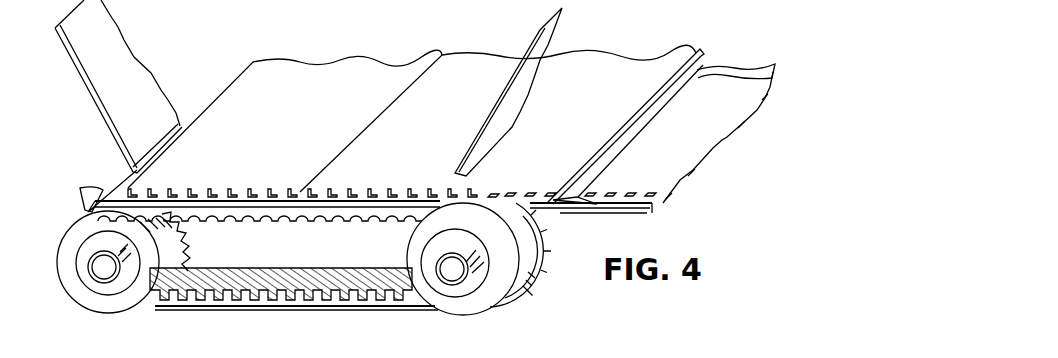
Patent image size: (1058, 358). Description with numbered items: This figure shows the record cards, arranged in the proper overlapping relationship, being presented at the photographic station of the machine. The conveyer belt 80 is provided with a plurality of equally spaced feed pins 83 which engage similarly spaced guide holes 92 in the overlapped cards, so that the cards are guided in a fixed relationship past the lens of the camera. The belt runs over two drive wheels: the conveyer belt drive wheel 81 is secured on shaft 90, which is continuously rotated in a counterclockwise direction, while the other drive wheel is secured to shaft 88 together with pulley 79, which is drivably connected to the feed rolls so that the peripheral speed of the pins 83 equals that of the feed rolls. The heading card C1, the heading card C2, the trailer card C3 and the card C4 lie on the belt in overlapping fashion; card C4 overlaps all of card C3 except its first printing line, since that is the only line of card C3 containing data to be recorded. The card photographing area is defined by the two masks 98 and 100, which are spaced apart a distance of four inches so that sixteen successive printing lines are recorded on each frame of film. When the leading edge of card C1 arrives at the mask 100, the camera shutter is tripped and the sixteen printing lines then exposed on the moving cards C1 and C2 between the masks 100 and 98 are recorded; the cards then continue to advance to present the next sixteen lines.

The pulley 79 is at (497, 297).
The conveyer belt 80 is at (283, 273).
The conveyer belt drive wheel 81 is at (72, 244).
The feed pins 83 is at (86, 198).
The shaft 88 is at (458, 270).
The shaft 90 is at (102, 270).
The guide holes 92 is at (652, 205).
The mask 98 is at (553, 28).
The mask 100 is at (122, 45).
The heading card C1 is at (306, 67).
The heading card C2 is at (601, 64).
The trailer card C3 is at (715, 72).
The card C4 is at (712, 136).